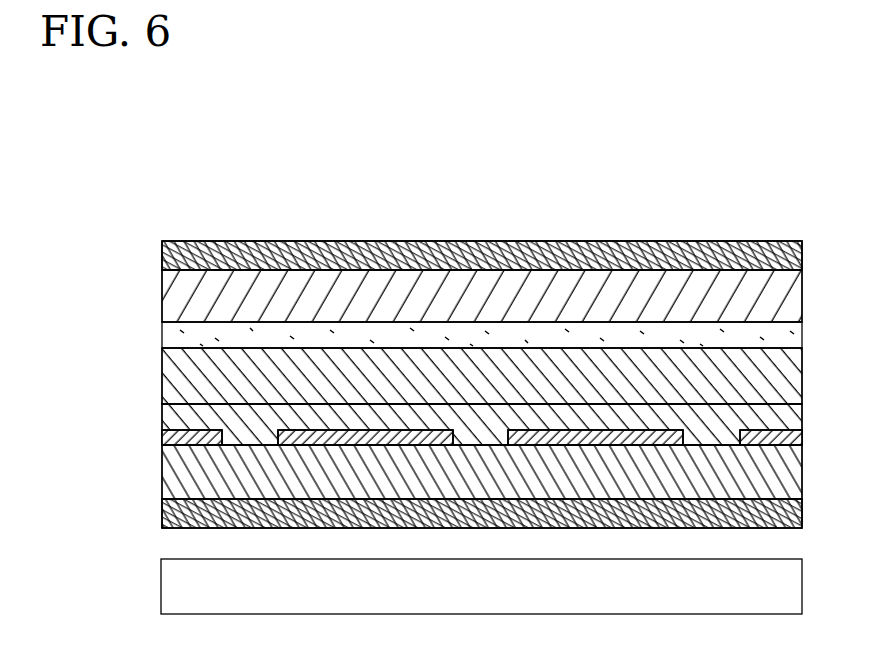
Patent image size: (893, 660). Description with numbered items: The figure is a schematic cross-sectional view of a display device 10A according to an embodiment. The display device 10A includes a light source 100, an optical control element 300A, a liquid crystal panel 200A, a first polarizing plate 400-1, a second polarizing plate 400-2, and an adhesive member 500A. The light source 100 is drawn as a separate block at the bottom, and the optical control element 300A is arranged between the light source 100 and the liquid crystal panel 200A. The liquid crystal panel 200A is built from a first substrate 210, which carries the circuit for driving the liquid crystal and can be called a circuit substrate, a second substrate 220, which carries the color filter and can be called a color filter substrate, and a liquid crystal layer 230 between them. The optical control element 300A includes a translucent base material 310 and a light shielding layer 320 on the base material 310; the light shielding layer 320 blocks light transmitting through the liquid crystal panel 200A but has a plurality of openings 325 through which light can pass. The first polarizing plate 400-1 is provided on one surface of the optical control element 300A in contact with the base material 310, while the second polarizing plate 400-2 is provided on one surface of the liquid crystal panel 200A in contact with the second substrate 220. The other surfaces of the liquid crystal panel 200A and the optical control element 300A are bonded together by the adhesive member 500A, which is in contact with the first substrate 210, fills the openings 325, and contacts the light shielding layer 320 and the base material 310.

The display device 10A is at (141, 125).
The light source 100 is at (181, 591).
The liquid crystal panel 200A is at (84, 266).
The first substrate 210 is at (162, 373).
The second substrate 220 is at (162, 296).
The liquid crystal layer 230 is at (162, 335).
The optical control element 300A is at (84, 433).
The base material 310 is at (162, 469).
The light shielding layer 320 is at (162, 438).
The opening 325 is at (483, 440).
The first polarizing plate 400-1 is at (162, 512).
The second polarizing plate 400-2 is at (162, 256).
The adhesive member 500A is at (162, 421).